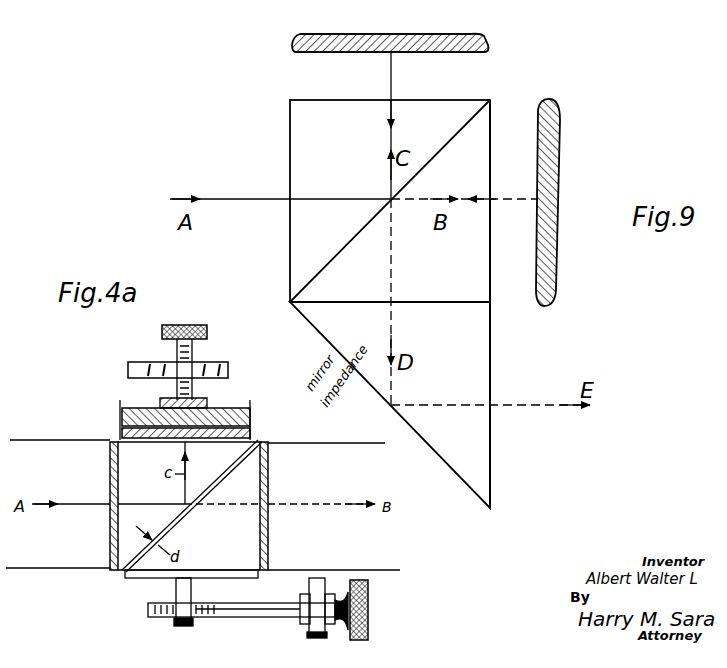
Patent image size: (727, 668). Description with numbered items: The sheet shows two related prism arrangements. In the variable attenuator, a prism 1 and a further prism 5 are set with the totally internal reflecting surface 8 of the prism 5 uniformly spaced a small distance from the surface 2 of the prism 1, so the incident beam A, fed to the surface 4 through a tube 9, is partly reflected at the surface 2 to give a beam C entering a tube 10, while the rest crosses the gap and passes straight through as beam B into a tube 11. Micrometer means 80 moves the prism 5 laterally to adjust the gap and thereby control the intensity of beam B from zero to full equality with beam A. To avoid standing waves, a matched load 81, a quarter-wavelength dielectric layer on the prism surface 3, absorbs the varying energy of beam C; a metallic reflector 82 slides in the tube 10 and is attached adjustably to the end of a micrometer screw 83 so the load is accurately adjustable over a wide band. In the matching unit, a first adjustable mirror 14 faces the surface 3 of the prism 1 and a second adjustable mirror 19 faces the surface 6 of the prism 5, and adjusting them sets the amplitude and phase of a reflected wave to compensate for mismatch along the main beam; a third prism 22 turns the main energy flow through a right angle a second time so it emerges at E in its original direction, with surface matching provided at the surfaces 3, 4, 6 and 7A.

In FIG. 9, the first adjustable mirror 14 is at (322, 33).
In FIG. 9, the prism surface 3 is at (334, 100).
In FIG. 4A, the prism surface 3 is at (178, 442).
In FIG. 9, the prism 1 is at (347, 161).
In FIG. 4A, the prism 1 is at (148, 473).
In FIG. 9, the further prism 5 is at (448, 274).
In FIG. 4A, the further prism 5 is at (216, 547).
In FIG. 9, the prism surface 4 is at (290, 264).
In FIG. 4A, the prism surface 4 is at (118, 470).
In FIG. 9, the prism surface 6 is at (490, 142).
In FIG. 4A, the prism surface 6 is at (260, 527).
In FIG. 9, the third prism 22 is at (462, 346).
In FIG. 9, the prism surface 7A is at (490, 384).
In FIG. 9, the second adjustable mirror 19 is at (538, 112).
In FIG. 4A, the micrometer screw 83 is at (198, 330).
In FIG. 4A, the metallic reflector 82 is at (138, 408).
In FIG. 4A, the matched load 81 is at (228, 438).
In FIG. 4A, the tube 10 is at (120, 414).
In FIG. 4A, the tube 9 is at (62, 440).
In FIG. 4A, the tube 11 is at (312, 443).
In FIG. 4A, the prism surface 2 is at (220, 474).
In FIG. 4A, the totally internal reflecting surface 8 is at (220, 472).
In FIG. 4A, the micrometer means 80 is at (250, 643).